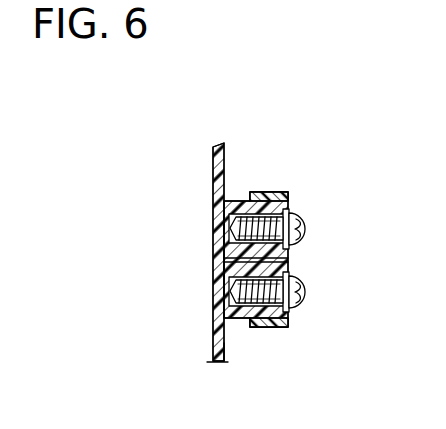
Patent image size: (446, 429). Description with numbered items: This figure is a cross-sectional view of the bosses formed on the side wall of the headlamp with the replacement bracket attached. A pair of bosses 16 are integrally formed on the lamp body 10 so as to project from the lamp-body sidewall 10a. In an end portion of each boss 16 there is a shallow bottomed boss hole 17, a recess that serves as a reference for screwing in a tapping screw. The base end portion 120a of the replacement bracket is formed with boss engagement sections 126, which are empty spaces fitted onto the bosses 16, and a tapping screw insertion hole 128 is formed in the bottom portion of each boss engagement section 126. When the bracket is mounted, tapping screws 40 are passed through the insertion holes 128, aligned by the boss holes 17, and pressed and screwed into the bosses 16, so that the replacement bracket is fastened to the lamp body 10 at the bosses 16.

The lamp body 10 is at (200, 258).
The lamp-body sidewall 10a is at (225, 343).
The base end portion 120a is at (260, 193).
The boss 16 is at (242, 200).
The boss engagement section 126 is at (277, 193).
The boss hole 17 is at (291, 212).
The tapping screw 40 is at (306, 230).
The tapping screw insertion hole 128 is at (297, 208).